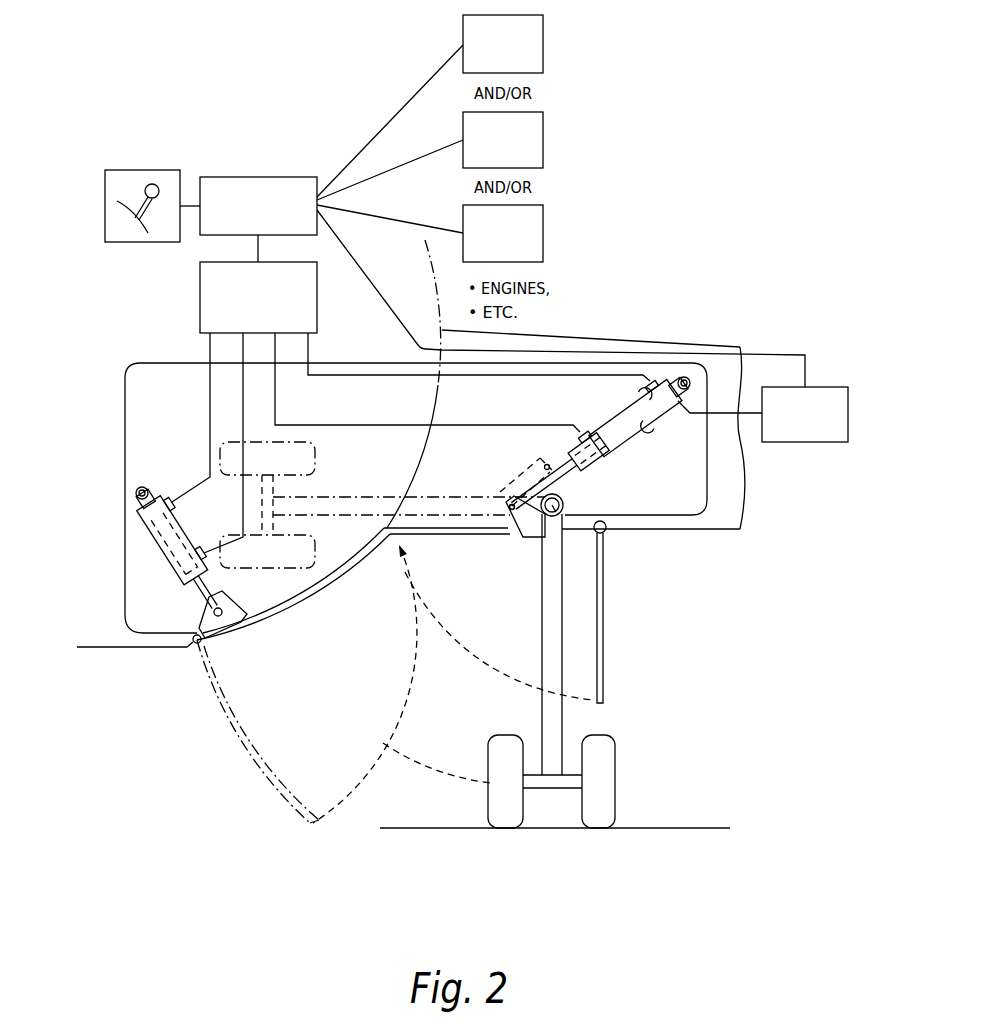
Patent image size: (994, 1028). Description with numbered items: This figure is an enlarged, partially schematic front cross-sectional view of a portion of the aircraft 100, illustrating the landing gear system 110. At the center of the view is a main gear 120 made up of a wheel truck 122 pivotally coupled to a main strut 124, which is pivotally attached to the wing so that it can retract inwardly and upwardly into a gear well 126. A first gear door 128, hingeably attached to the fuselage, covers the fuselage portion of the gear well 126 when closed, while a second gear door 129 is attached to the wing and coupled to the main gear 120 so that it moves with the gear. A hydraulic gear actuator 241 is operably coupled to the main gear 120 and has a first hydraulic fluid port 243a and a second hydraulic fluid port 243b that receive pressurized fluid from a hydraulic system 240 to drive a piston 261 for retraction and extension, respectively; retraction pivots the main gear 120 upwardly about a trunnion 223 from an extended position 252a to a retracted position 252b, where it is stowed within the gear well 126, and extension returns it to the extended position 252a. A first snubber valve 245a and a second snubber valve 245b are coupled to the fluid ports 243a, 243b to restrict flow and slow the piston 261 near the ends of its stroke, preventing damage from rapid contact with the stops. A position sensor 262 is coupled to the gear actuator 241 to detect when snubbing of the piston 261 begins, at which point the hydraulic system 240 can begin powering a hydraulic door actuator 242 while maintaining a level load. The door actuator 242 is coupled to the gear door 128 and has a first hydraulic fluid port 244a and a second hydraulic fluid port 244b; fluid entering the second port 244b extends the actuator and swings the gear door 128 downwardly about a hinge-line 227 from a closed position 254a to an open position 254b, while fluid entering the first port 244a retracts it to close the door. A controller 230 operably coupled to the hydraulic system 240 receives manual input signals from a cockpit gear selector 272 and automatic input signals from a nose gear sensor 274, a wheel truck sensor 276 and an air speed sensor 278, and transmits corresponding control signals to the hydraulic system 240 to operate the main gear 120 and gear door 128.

The aircraft 100 is at (698, 106).
The landing gear system 110 is at (93, 597).
The main gear 120 is at (574, 691).
The wheel truck 122 is at (615, 770).
The main strut 124 is at (542, 610).
The gear well 126 is at (464, 479).
The first gear door 128 is at (274, 583).
The second gear door 129 is at (603, 640).
The trunnion 223 is at (563, 509).
The hinge-line 227 is at (187, 641).
The controller 230 is at (253, 177).
The hydraulic system 240 is at (200, 300).
The hydraulic gear actuator 241 is at (602, 405).
The hydraulic door actuator 242 is at (181, 553).
The first hydraulic fluid port 243a is at (575, 431).
The second hydraulic fluid port 243b is at (654, 378).
The first hydraulic fluid port 244a is at (208, 556).
The second hydraulic fluid port 244b is at (148, 487).
The first snubber valve 245a is at (580, 431).
The second snubber valve 245b is at (650, 425).
The extended position 252a is at (553, 790).
The retracted position 252b is at (297, 432).
The closed position 254a is at (357, 580).
The open position 254b is at (270, 797).
The piston 261 is at (619, 455).
The position sensor 262 is at (807, 445).
The cockpit gear selector 272 is at (148, 170).
The nose gear sensor 274 is at (543, 34).
The wheel truck sensor 276 is at (543, 130).
The air speed sensor 278 is at (543, 225).